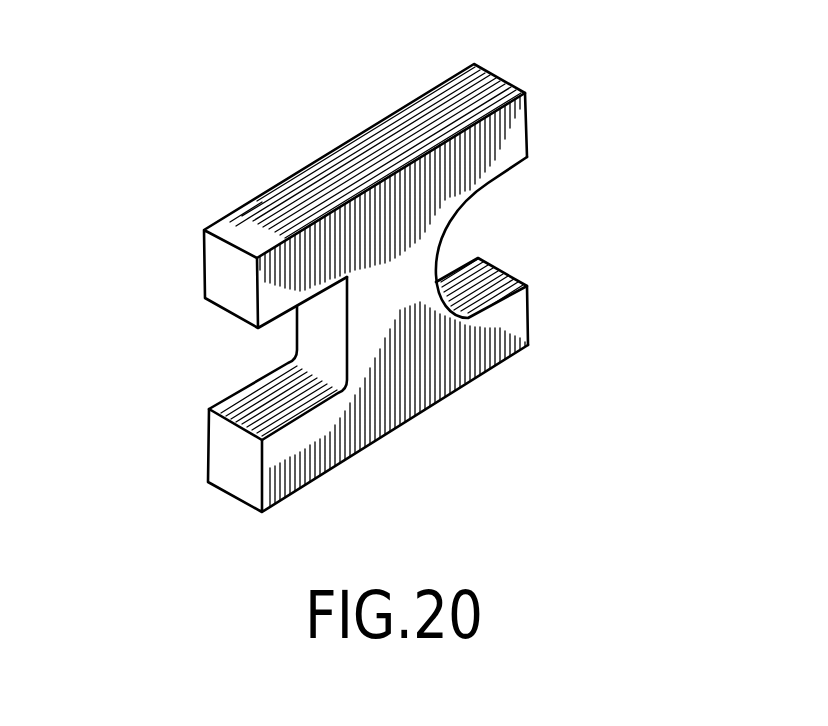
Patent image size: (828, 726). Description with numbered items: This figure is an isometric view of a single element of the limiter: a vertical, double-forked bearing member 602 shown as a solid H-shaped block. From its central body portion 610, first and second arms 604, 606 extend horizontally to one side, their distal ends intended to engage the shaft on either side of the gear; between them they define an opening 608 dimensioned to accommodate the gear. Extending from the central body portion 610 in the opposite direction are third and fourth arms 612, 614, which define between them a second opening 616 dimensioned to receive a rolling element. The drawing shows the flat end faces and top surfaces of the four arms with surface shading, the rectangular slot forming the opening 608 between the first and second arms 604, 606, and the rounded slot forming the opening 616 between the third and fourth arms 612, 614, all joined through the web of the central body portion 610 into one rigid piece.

The upper bar 602 is at (363, 160).
The first arm 604 is at (275, 282).
The second arm 606 is at (282, 455).
The rectangular slot 608 is at (240, 358).
The central body portion 610 is at (410, 365).
The third arm 612 is at (518, 127).
The fourth arm 614 is at (517, 320).
The curved slot 616 is at (505, 229).